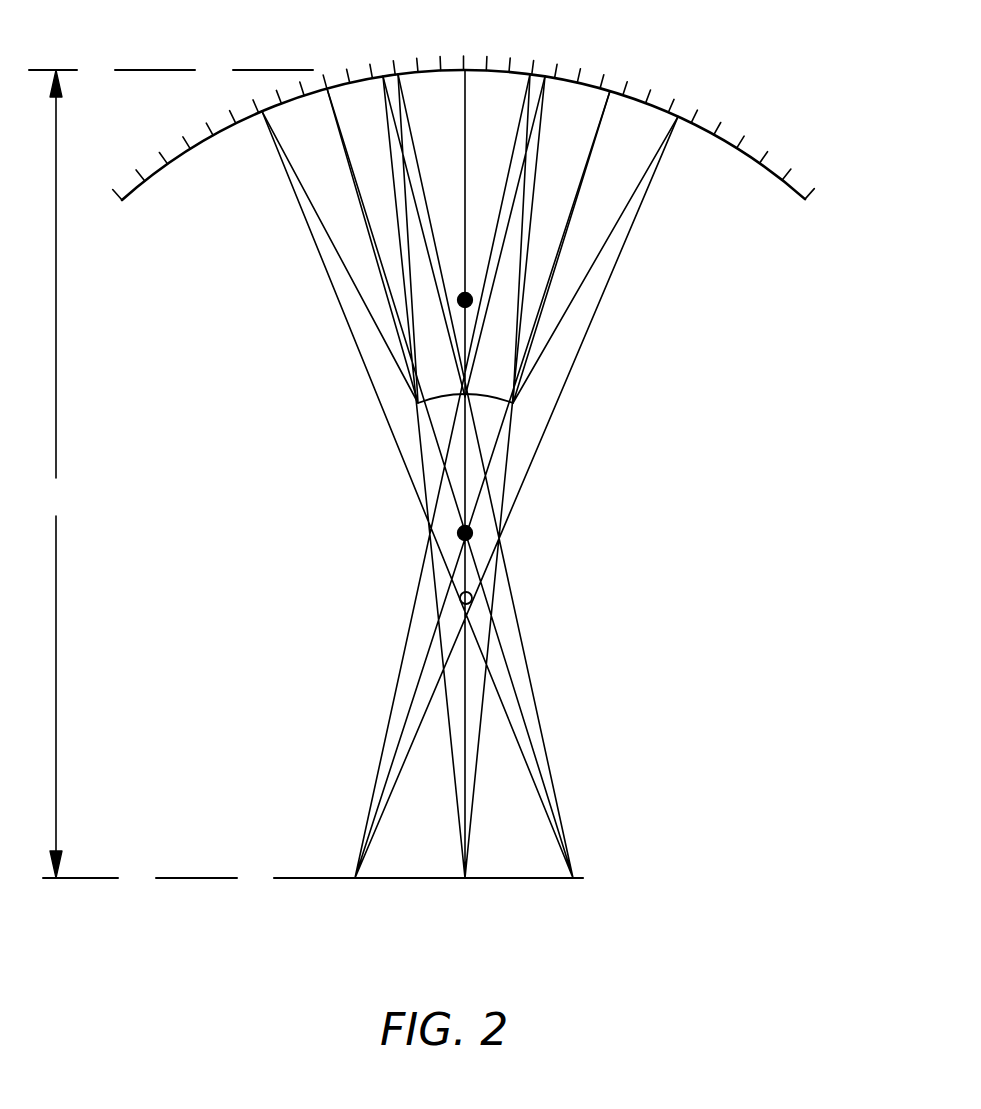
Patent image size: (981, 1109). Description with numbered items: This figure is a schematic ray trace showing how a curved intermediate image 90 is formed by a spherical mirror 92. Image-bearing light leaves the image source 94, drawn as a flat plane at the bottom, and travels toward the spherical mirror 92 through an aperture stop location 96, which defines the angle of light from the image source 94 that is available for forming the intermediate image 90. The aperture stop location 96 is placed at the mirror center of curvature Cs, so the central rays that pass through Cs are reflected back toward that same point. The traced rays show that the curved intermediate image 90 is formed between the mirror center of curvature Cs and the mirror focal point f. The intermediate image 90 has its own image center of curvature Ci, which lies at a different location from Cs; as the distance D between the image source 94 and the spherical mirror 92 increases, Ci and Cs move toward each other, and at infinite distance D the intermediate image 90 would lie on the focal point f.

The intermediate image 90 is at (485, 399).
The spherical mirror 92 is at (718, 137).
The image source 94 is at (543, 879).
The aperture stop location 96 is at (500, 537).
The mirror focal point f is at (460, 302).
The mirror center of curvature Cs is at (460, 528).
The image center of curvature Ci is at (471, 596).
The distance between image source and spherical mirror D is at (171, 474).